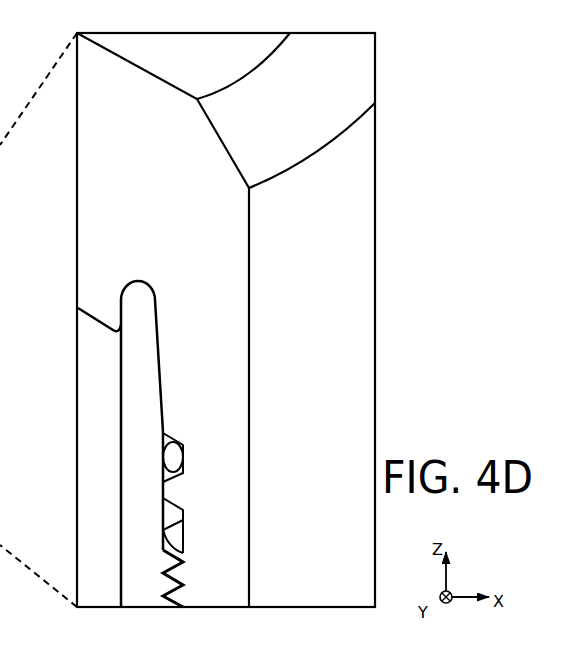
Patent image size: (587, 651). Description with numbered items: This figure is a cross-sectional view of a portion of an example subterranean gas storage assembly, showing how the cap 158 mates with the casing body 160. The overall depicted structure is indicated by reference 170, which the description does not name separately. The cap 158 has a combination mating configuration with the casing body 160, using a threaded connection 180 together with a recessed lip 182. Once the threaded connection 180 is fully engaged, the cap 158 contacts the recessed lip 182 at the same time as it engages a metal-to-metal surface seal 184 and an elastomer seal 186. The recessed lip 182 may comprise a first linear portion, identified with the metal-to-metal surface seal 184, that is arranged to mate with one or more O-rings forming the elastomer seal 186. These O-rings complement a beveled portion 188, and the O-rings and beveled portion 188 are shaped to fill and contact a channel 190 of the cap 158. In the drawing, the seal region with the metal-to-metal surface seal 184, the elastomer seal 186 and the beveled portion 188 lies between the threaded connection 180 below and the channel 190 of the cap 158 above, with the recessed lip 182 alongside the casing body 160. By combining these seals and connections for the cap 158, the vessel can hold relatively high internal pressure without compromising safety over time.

The cap 158 is at (183, 110).
The casing body 160 is at (77, 524).
The structure 170 is at (396, 61).
The threaded connection 180 is at (189, 589).
The recessed lip 182 is at (120, 357).
The metal-to-metal surface seal 184 is at (162, 482).
The elastomer seal 186 is at (183, 460).
The beveled portion 188 is at (161, 338).
The channel 190 is at (137, 279).